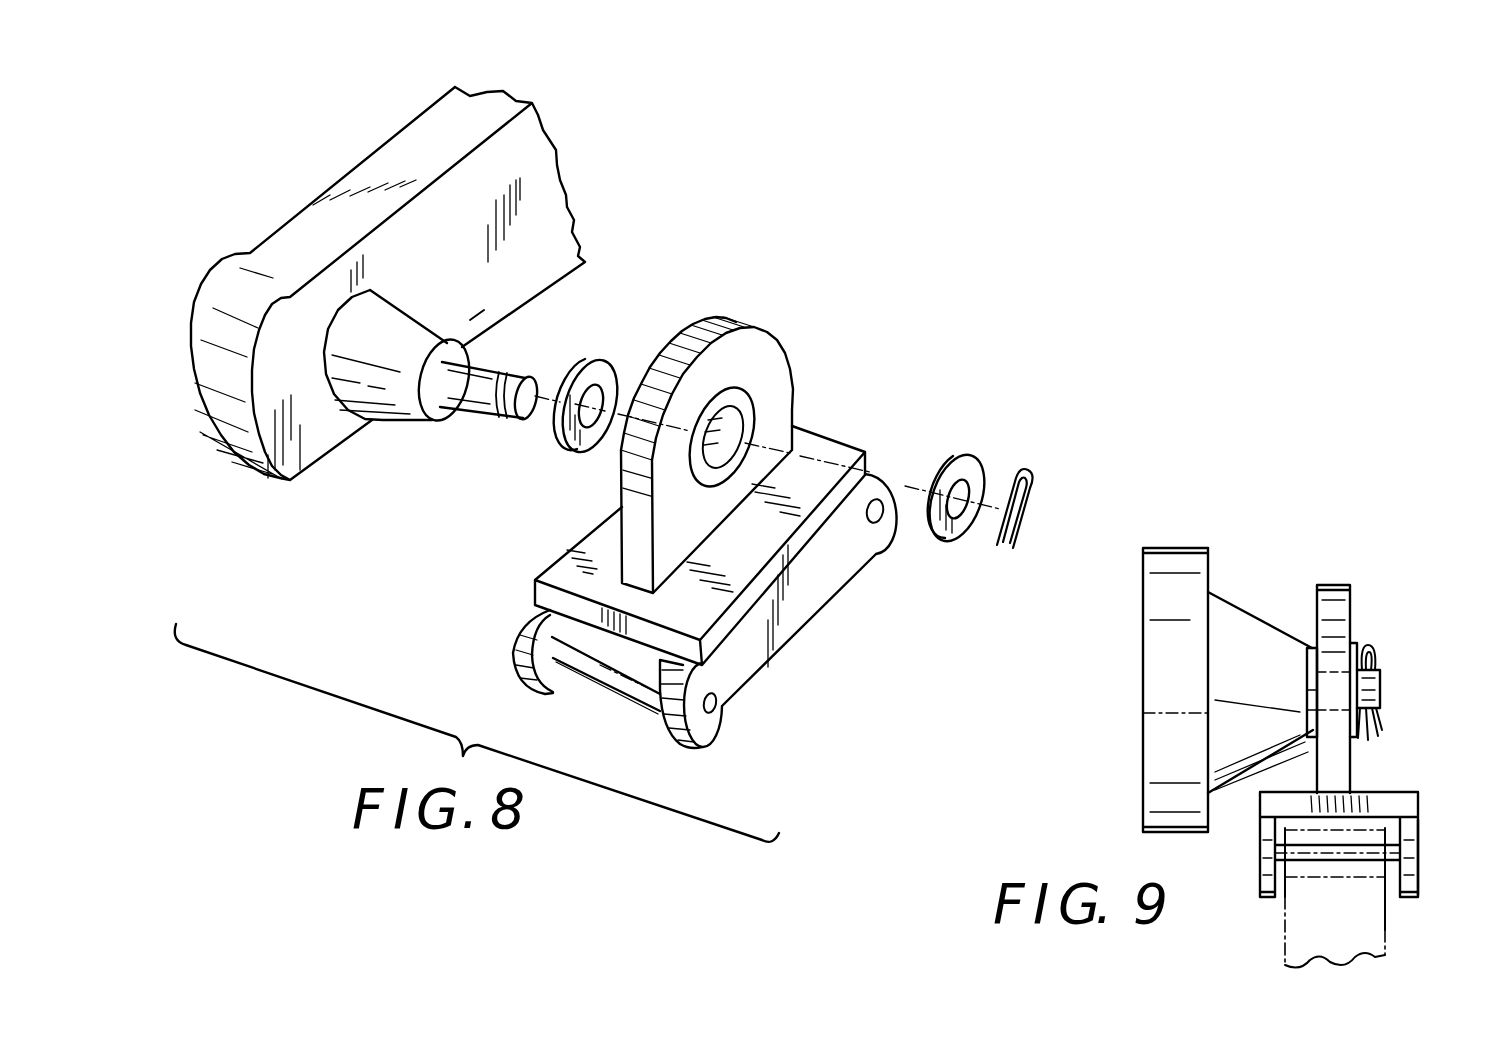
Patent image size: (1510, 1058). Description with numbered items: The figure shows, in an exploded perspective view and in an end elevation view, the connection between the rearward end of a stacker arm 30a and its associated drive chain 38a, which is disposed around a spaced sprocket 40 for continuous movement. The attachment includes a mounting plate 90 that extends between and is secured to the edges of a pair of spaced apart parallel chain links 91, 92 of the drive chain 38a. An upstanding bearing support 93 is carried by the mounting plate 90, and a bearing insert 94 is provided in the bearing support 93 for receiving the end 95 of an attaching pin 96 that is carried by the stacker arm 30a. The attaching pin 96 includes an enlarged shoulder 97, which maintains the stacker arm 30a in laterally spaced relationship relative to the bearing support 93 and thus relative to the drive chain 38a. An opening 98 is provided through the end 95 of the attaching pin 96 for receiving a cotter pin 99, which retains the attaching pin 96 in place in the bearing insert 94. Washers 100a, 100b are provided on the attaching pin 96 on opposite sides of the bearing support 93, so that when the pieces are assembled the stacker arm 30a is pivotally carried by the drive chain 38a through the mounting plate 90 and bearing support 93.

In FIG. 8, the stacker arm 30a is at (552, 208).
In FIG. 9, the stacker arm 30a is at (1182, 557).
In FIG. 8, the attaching pin 96 is at (400, 311).
In FIG. 9, the attaching pin 96 is at (1230, 615).
In FIG. 8, the enlarged shoulder 97 is at (483, 313).
In FIG. 8, the opening 98 is at (497, 368).
In FIG. 8, the end of attaching pin 95 is at (477, 411).
In FIG. 9, the end of attaching pin 95 is at (1380, 680).
In FIG. 8, the washer 100a is at (598, 360).
In FIG. 9, the washer 100a is at (1290, 655).
In FIG. 8, the bearing insert 94 is at (722, 400).
In FIG. 8, the bearing support 93 is at (763, 353).
In FIG. 9, the bearing support 93 is at (1335, 600).
In FIG. 8, the mounting plate 90 is at (826, 447).
In FIG. 9, the mounting plate 90 is at (1388, 792).
In FIG. 8, the chain link 91 is at (520, 622).
In FIG. 8, the chain link 92 is at (797, 617).
In FIG. 8, the washer 100b is at (962, 463).
In FIG. 9, the washer 100b is at (1357, 643).
In FIG. 8, the cotter pin 99 is at (1030, 470).
In FIG. 9, the cotter pin 99 is at (1377, 650).
In FIG. 9, the drive chain 38a is at (1419, 841).
In FIG. 9, the sprocket 40 is at (1387, 922).